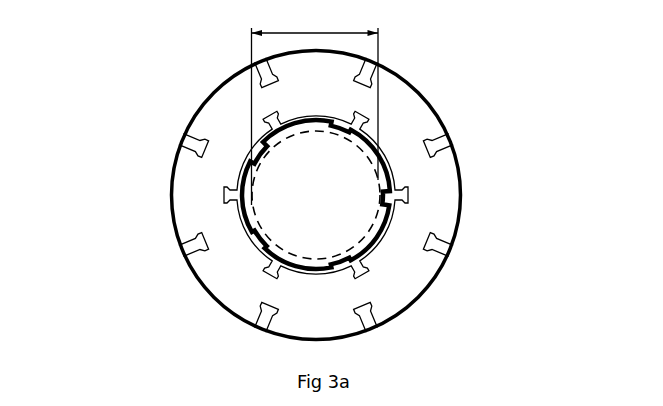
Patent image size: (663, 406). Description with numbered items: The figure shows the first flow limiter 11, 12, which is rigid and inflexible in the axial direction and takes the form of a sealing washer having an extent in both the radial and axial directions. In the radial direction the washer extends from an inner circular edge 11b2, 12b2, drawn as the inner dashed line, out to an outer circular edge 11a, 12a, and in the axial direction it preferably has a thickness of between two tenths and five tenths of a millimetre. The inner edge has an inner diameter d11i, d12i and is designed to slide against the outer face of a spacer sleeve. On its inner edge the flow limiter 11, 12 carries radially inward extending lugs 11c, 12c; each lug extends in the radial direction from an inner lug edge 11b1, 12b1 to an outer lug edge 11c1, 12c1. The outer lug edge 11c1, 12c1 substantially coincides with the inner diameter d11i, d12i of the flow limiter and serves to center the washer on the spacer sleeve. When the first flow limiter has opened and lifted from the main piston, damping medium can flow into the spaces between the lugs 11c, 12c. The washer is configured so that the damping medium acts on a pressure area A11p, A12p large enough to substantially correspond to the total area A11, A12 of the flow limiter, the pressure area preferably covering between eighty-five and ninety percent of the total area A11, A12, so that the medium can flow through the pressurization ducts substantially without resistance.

The first flow limiter 11 is at (324, 217).
The first flow limiter 12 is at (324, 217).
The outer circular edge 11a is at (256, 195).
The outer circular edge 12a is at (170, 215).
The inner lug edge 11b1 is at (211, 194).
The inner lug edge 12b1 is at (243, 185).
The inner circular edge 11b2 is at (152, 310).
The inner circular edge 12b2 is at (265, 242).
The lug 11c is at (232, 221).
The lug 12c is at (260, 240).
The outer lug edge 11c1 is at (208, 208).
The outer lug edge 12c1 is at (258, 237).
The total area A11 is at (388, 157).
The total area A12 is at (452, 240).
The pressure area A11p is at (406, 332).
The pressure area A12p is at (382, 283).
The inner diameter d11i is at (315, 108).
The inner diameter d12i is at (315, 108).